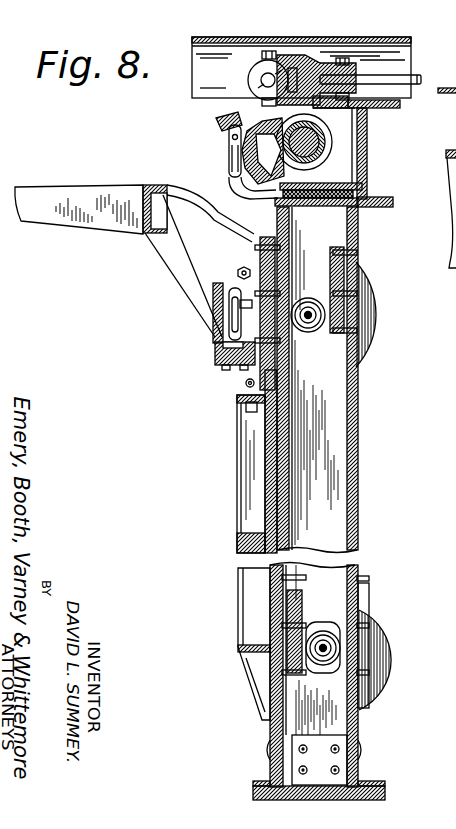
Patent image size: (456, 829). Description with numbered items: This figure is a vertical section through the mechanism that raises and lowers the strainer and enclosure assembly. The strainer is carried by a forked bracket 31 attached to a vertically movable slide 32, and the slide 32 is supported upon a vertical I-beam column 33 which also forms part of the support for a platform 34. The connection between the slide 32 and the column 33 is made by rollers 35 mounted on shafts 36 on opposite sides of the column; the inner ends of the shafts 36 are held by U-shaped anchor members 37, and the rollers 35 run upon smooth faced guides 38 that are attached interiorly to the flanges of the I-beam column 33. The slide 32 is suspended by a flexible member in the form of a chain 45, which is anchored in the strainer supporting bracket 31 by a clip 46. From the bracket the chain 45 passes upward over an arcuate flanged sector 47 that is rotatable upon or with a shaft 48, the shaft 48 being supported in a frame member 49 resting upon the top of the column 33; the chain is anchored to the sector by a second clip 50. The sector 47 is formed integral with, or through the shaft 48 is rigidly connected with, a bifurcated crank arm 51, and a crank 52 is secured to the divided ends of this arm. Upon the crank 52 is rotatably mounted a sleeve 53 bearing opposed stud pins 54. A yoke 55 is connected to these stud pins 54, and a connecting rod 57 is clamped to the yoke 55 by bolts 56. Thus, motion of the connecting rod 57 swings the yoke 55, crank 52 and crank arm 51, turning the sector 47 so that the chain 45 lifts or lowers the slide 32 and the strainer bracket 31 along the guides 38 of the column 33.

The forked bracket 31 is at (130, 226).
The vertically movable slide 32 is at (247, 490).
The vertical I-beam column 33 is at (344, 496).
The platform 34 is at (393, 41).
The rollers 35 is at (312, 330).
The shafts 36 is at (306, 305).
The U-shaped anchor members 37 is at (340, 622).
The smooth faced guides 38 is at (276, 252).
The chain 45 is at (229, 152).
The clip 46 is at (218, 354).
The arcuate flanged sector 47 is at (240, 184).
The shaft 48 is at (322, 158).
The frame member 49 is at (367, 145).
The clip 50 is at (218, 122).
The bifurcated crank arm 51 is at (330, 102).
The crank 52 is at (262, 78).
The sleeve 53 is at (258, 66).
The stud pins 54 is at (269, 51).
The yoke 55 is at (290, 60).
The bolts 56 is at (344, 57).
The connecting rod 57 is at (418, 78).